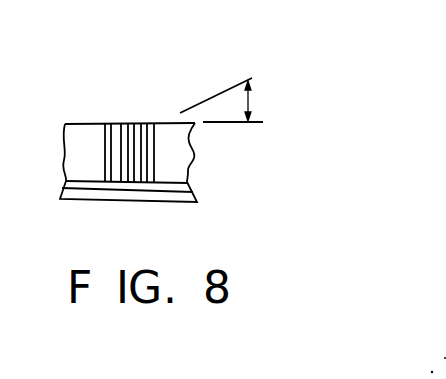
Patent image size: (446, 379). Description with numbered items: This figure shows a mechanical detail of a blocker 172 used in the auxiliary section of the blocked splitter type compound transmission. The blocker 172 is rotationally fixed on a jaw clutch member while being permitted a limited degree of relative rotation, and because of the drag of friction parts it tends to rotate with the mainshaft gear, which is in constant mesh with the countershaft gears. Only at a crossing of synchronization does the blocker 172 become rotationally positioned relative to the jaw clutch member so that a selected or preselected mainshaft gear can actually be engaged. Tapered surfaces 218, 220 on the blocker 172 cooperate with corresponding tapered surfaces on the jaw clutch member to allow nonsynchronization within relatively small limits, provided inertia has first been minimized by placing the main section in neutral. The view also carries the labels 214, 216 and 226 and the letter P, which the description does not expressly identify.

The blocker 172 is at (197, 178).
The body block 214 is at (193, 145).
The groove 216 is at (106, 141).
The tapered surface 218 is at (140, 137).
The tapered surface 220 is at (114, 138).
The angle 226 is at (257, 102).
The pitch P is at (233, 122).